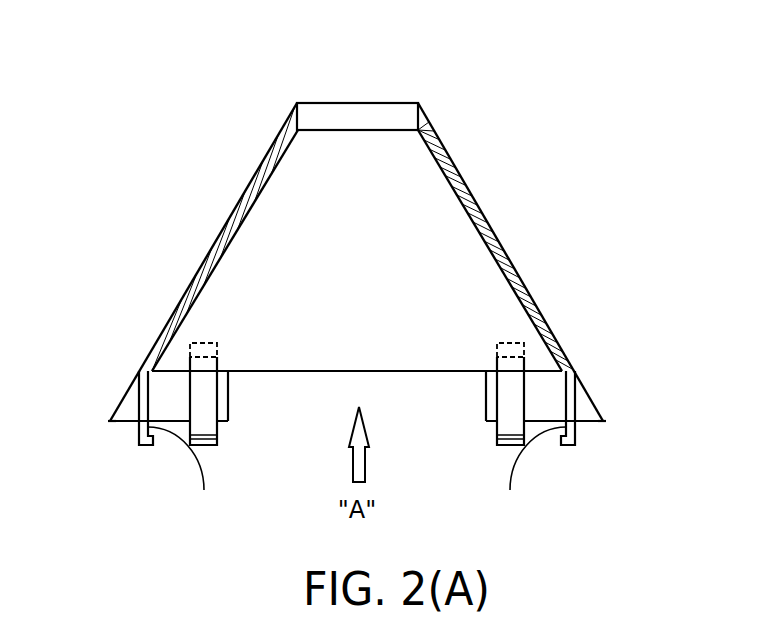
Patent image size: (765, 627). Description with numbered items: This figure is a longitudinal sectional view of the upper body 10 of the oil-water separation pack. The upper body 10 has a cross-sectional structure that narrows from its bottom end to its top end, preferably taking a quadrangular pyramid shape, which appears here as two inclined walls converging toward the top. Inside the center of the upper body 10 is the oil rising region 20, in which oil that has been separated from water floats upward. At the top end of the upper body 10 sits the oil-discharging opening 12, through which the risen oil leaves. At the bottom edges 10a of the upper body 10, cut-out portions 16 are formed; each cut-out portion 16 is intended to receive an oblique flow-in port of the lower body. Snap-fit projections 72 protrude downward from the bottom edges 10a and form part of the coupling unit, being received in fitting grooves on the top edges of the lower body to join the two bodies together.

The upper body 10 is at (511, 130).
The bottom edges 10a is at (113, 424).
The oil-discharging opening 12 is at (353, 115).
The cut-out portions 16 is at (130, 394).
The oil rising region 20 is at (304, 224).
The snap-fit projections 72 is at (207, 440).